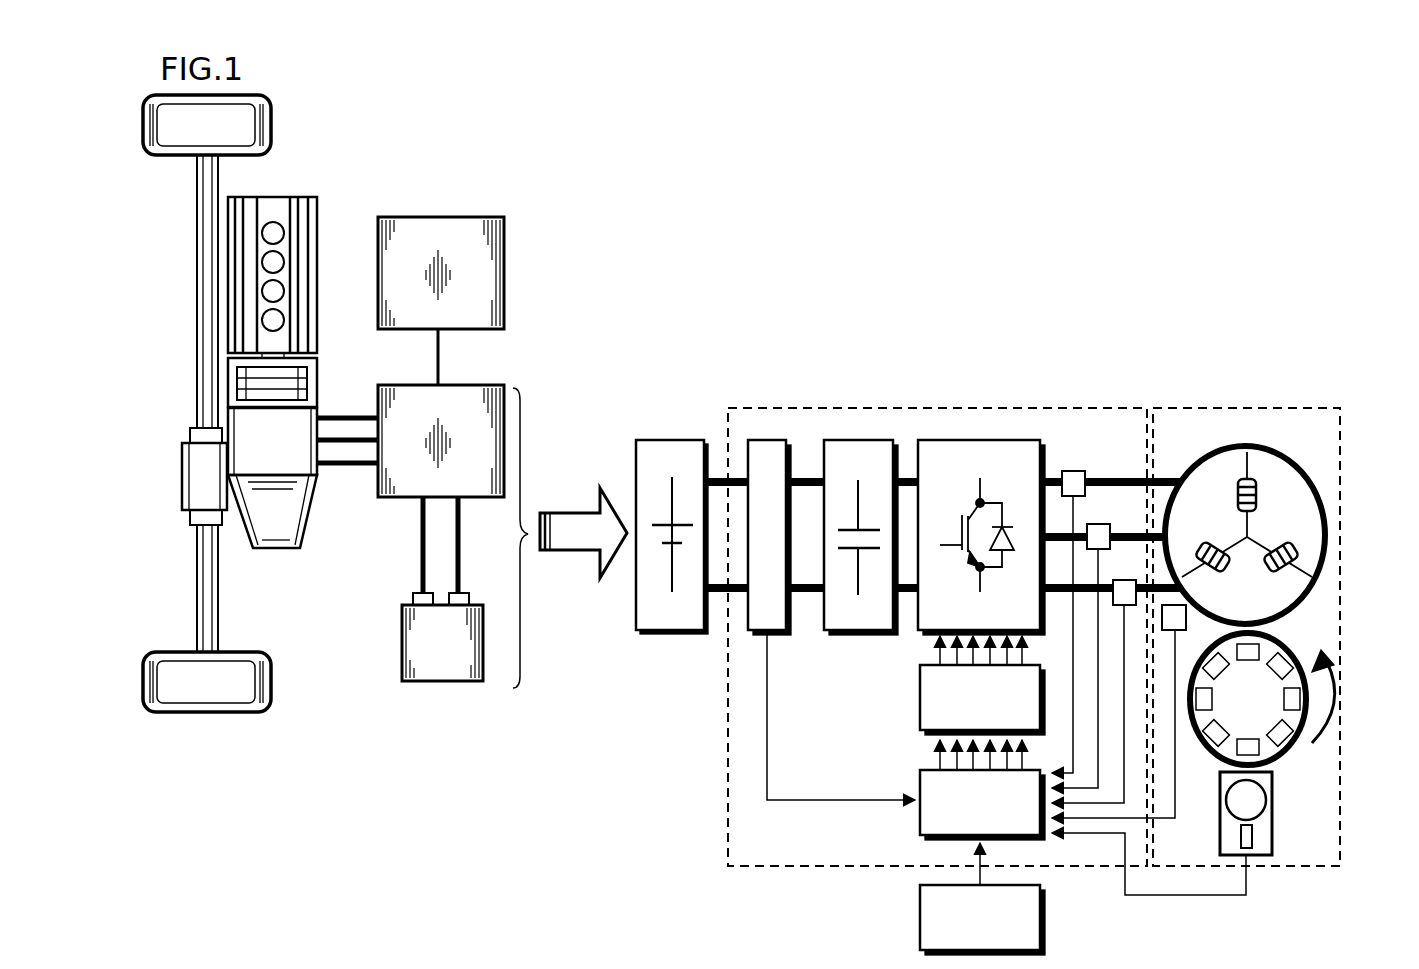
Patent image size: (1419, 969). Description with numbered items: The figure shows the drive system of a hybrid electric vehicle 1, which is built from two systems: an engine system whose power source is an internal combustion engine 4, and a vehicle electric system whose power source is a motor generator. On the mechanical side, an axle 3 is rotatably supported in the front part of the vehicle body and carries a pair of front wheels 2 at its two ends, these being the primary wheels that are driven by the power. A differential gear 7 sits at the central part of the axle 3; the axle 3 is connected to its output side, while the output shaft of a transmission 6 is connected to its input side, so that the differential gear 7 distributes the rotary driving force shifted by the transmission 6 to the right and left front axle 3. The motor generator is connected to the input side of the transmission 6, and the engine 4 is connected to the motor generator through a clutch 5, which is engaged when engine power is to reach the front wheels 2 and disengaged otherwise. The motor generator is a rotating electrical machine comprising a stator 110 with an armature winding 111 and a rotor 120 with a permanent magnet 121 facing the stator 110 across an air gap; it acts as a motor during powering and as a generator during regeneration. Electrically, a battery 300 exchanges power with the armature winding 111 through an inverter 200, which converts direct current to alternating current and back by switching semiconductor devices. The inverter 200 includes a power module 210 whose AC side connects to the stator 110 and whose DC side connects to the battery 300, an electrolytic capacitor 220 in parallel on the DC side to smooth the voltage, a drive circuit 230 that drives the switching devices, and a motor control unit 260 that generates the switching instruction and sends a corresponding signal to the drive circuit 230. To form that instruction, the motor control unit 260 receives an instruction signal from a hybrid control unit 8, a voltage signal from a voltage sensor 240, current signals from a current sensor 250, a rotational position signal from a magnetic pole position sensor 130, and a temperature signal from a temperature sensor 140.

The hybrid electric vehicle 1 is at (448, 88).
The front wheels 2 is at (272, 121).
The axle 3 is at (197, 324).
The internal combustion engine 4 is at (318, 208).
The clutch 5 is at (318, 381).
The transmission 6 is at (300, 530).
The differential gear 7 is at (182, 460).
The hybrid control unit 8 is at (505, 246).
The armature (stator) 110 is at (1252, 446).
The armature winding 111 is at (1292, 548).
The magnetic field system (rotor) 120 is at (1302, 712).
The permanent magnet 121 is at (1285, 740).
The magnetic pole position sensor 130 is at (1272, 843).
The temperature sensor 140 is at (1179, 640).
The inverter 200 is at (489, 385).
The power module 210 is at (980, 440).
The electrolytic capacitor 220 is at (858, 440).
The drive circuit 230 is at (918, 699).
The voltage sensor 240 is at (765, 440).
The current sensor 250 is at (1124, 580).
The motor control unit 260 is at (918, 822).
The battery 300 is at (442, 682).